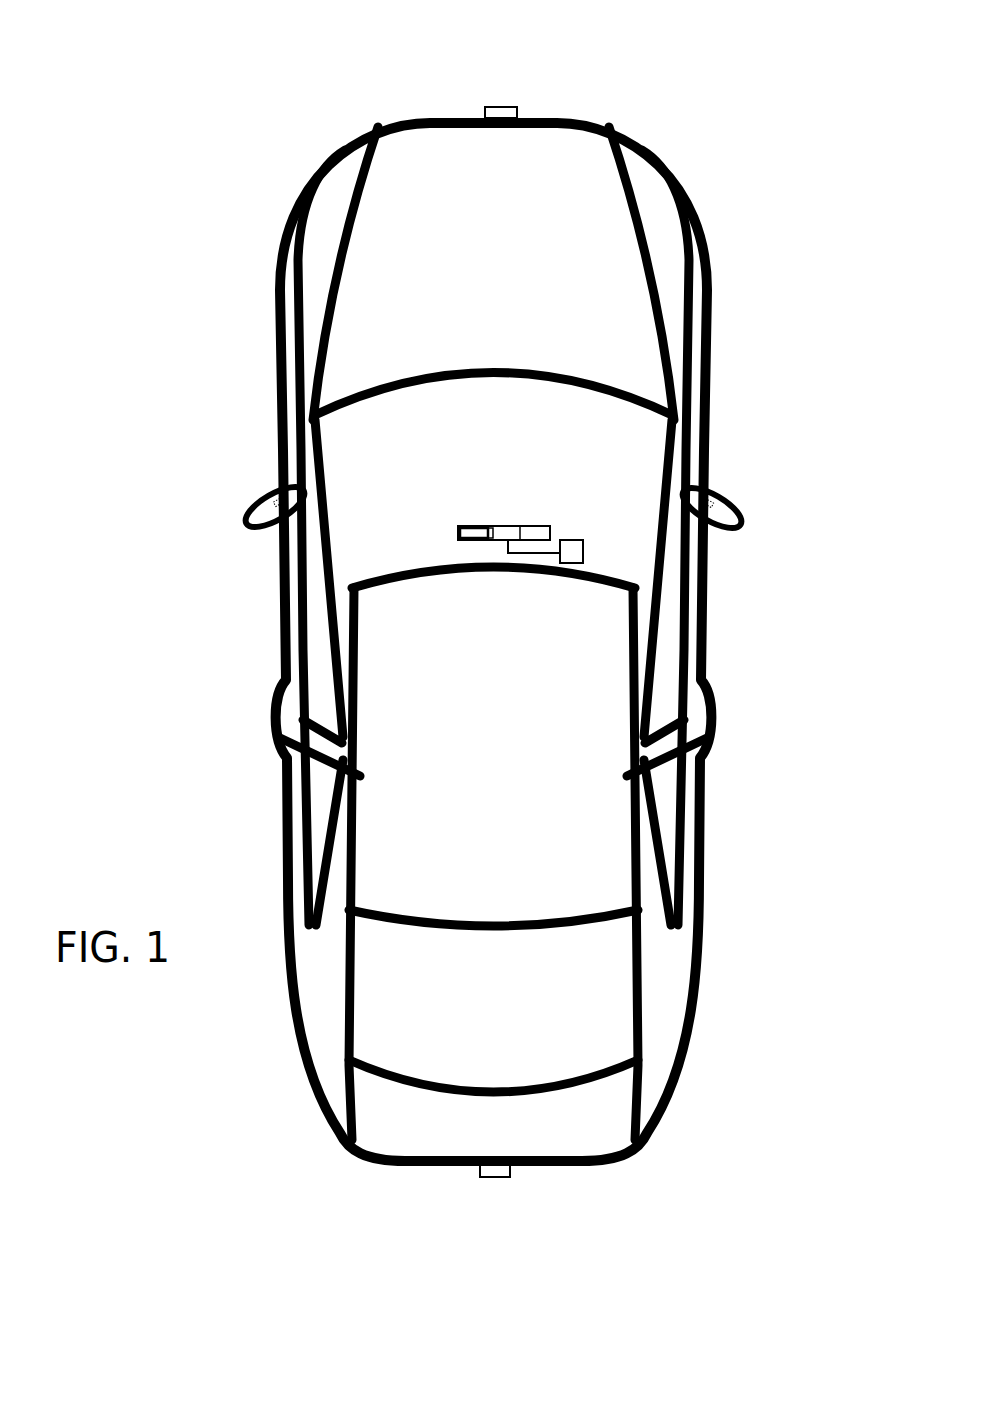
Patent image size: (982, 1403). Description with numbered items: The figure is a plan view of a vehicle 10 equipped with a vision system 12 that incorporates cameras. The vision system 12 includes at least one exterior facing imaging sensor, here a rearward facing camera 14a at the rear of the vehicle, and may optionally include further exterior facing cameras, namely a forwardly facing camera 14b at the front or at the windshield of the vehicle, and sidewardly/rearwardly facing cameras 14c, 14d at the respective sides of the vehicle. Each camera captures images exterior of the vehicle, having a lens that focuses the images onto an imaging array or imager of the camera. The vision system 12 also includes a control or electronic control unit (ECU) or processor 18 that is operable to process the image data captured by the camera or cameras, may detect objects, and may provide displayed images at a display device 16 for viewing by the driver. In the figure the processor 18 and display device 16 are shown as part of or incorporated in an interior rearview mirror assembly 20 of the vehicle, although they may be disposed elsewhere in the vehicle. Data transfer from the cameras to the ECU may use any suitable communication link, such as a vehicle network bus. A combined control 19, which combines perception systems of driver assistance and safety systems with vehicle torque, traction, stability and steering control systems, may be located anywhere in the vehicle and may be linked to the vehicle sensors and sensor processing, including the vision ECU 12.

The vehicle 10 is at (221, 205).
The vision system 12 is at (558, 478).
The rearward facing camera 14a is at (500, 1177).
The forwardly facing camera 14b is at (503, 105).
The sidewardly/rearwardly facing camera 14c is at (263, 500).
The sidewardly/rearwardly facing camera 14d is at (720, 503).
The display device 16 is at (473, 530).
The electronic control unit 18 is at (502, 523).
The combined control 19 is at (585, 545).
The interior rearview mirror assembly 20 is at (550, 527).